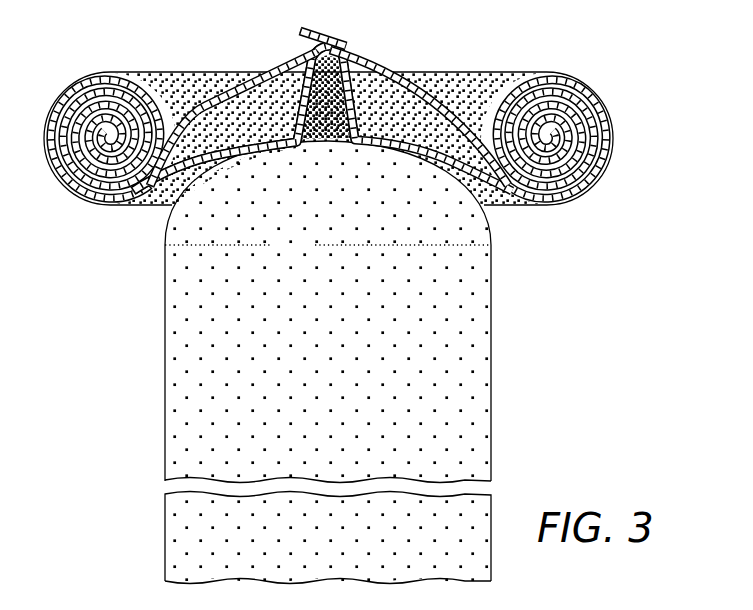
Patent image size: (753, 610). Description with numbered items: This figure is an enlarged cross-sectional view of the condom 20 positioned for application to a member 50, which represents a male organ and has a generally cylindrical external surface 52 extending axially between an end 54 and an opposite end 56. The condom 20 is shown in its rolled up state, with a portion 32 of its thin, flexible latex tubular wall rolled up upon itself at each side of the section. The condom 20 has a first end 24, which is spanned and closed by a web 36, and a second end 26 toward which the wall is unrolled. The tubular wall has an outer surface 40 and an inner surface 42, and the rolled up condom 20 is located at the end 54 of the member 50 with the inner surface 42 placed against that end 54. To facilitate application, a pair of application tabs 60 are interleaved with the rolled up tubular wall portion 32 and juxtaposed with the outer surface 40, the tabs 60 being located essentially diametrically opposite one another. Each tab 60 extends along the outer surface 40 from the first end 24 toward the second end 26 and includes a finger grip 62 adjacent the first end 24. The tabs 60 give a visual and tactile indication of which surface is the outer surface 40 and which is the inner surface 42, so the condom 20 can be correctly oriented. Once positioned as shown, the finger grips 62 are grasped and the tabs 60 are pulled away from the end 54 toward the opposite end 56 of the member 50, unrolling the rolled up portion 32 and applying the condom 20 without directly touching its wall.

The condom 20 is at (67, 82).
The first end 24 is at (252, 138).
The second end 26 is at (110, 178).
The rolled up tubular wall portion 32 is at (473, 84).
The web 36 is at (403, 150).
The outer surface 40 is at (193, 140).
The inner surface 42 is at (185, 185).
The member 50 is at (165, 397).
The external surface 52 is at (165, 340).
The end 54 is at (344, 108).
The opposite end 56 is at (165, 577).
The application tab 60 is at (203, 100).
The finger grip 62 is at (327, 45).